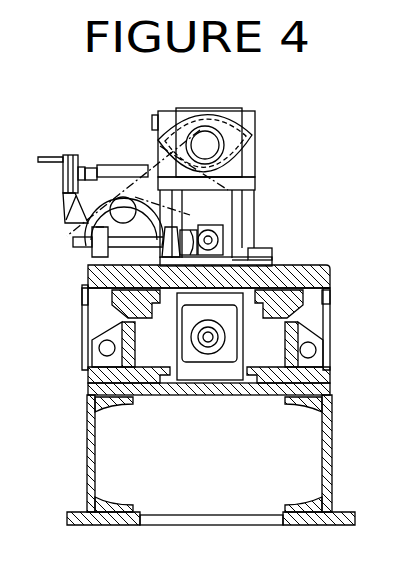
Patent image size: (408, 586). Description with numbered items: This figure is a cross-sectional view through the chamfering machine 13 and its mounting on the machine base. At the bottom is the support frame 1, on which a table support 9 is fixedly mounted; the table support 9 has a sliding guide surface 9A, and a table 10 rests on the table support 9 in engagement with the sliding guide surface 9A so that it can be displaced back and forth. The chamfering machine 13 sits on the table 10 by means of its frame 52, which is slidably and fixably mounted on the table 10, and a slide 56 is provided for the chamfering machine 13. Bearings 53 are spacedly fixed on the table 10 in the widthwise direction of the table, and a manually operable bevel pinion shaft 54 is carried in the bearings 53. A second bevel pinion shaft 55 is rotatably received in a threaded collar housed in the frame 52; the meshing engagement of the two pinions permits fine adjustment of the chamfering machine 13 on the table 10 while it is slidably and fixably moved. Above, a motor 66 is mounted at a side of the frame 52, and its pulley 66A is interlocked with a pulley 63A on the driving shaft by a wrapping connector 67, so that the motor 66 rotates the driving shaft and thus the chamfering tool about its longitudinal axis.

The support frame 1 is at (332, 462).
The table support 9 is at (330, 376).
The sliding guide surface 9A is at (308, 289).
The table 10 is at (310, 280).
The chamfering machine 13 is at (258, 137).
The frame 52 is at (250, 210).
The bearings 53 is at (172, 242).
The manually operable bevel pinion shaft 54 is at (100, 243).
The second bevel pinion shaft 55 is at (220, 238).
The slide 56 is at (272, 254).
The pulley 63A is at (210, 126).
The motor 66 is at (117, 180).
The pulley 66A is at (88, 226).
The wrapping connector 67 is at (146, 165).